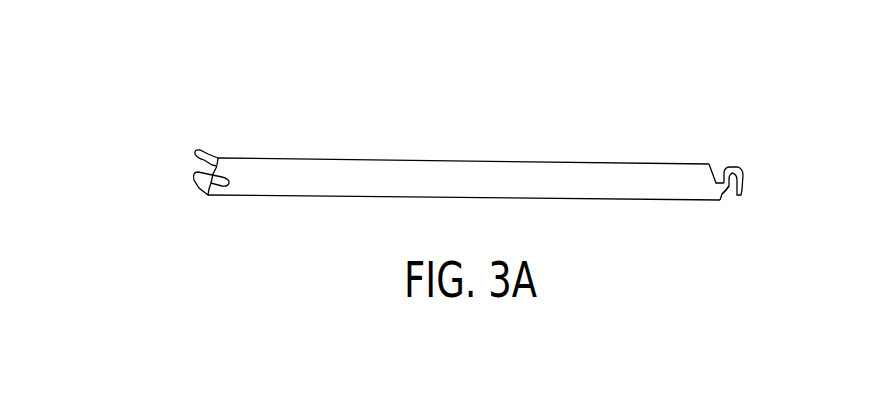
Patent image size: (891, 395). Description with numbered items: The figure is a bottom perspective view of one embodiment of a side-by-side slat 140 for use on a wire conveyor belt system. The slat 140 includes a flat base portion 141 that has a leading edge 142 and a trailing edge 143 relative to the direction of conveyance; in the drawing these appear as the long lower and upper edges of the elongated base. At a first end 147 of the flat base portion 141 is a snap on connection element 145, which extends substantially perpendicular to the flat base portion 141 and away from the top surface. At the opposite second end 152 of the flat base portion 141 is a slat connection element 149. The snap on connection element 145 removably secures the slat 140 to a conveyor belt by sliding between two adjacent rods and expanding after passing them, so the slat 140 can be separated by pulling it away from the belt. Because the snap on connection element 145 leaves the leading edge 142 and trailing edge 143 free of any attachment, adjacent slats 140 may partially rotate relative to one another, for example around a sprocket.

The slat 140 is at (767, 108).
The flat base portion 141 is at (334, 172).
The leading edge 142 is at (668, 203).
The trailing edge 143 is at (611, 163).
The snap on connection element 145 is at (166, 168).
The first end 147 is at (165, 143).
The slat connection element 149 is at (777, 192).
The second end 152 is at (783, 172).